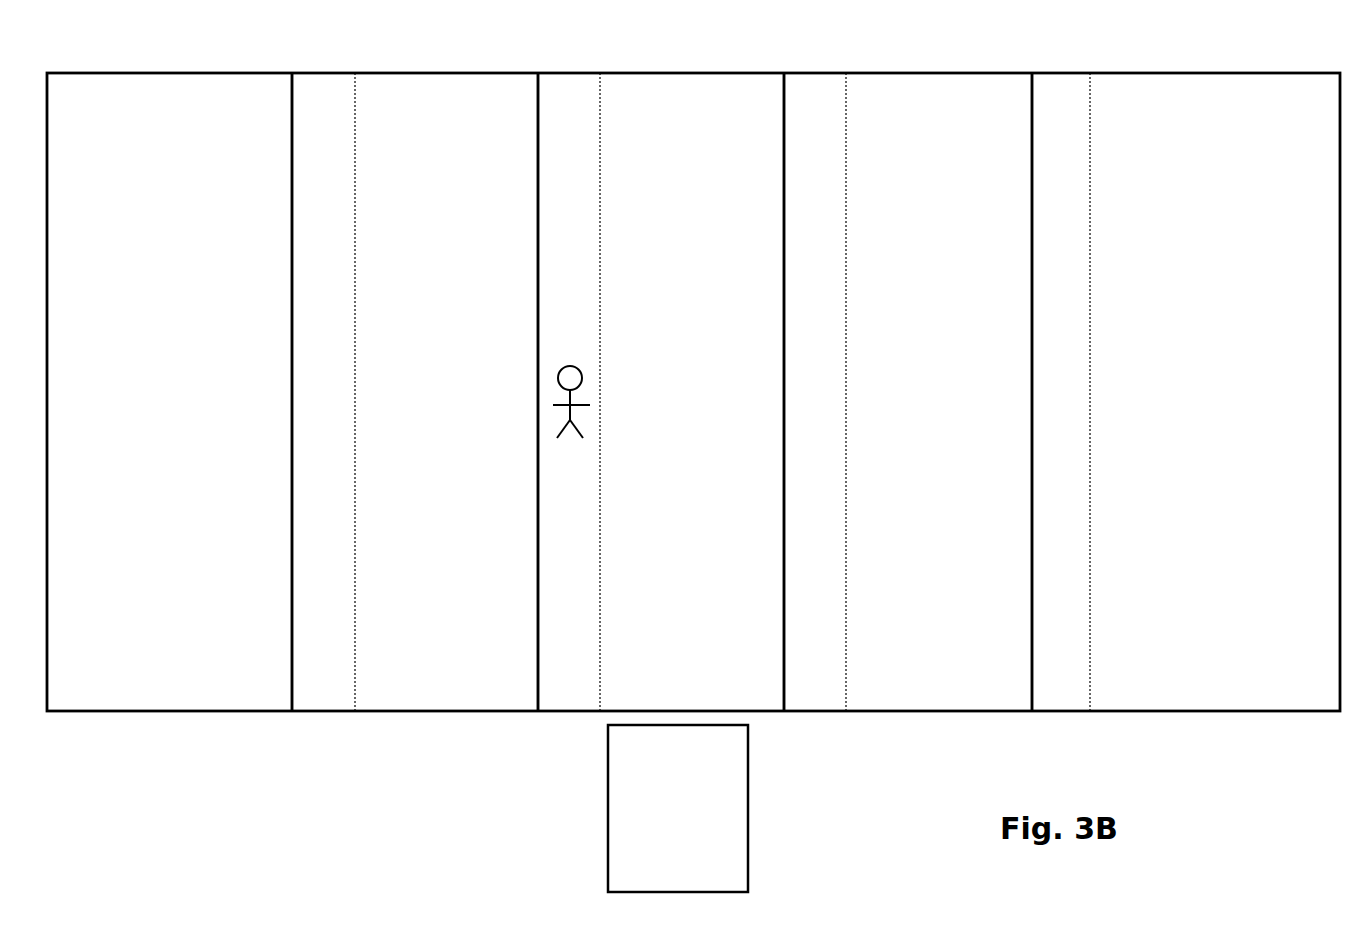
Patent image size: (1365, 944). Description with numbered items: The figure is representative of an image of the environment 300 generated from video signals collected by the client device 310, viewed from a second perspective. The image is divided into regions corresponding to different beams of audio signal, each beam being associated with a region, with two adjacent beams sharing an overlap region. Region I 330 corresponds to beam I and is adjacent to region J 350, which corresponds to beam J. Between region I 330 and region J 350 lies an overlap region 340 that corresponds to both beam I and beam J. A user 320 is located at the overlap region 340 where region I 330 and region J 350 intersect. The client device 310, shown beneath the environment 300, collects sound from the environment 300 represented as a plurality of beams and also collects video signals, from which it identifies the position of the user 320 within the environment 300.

The environment 300 is at (78, 48).
The client device 310 is at (656, 830).
The user 320 is at (576, 368).
The region I 330 is at (445, 72).
The overlap region 340 is at (561, 72).
The region J 350 is at (723, 72).